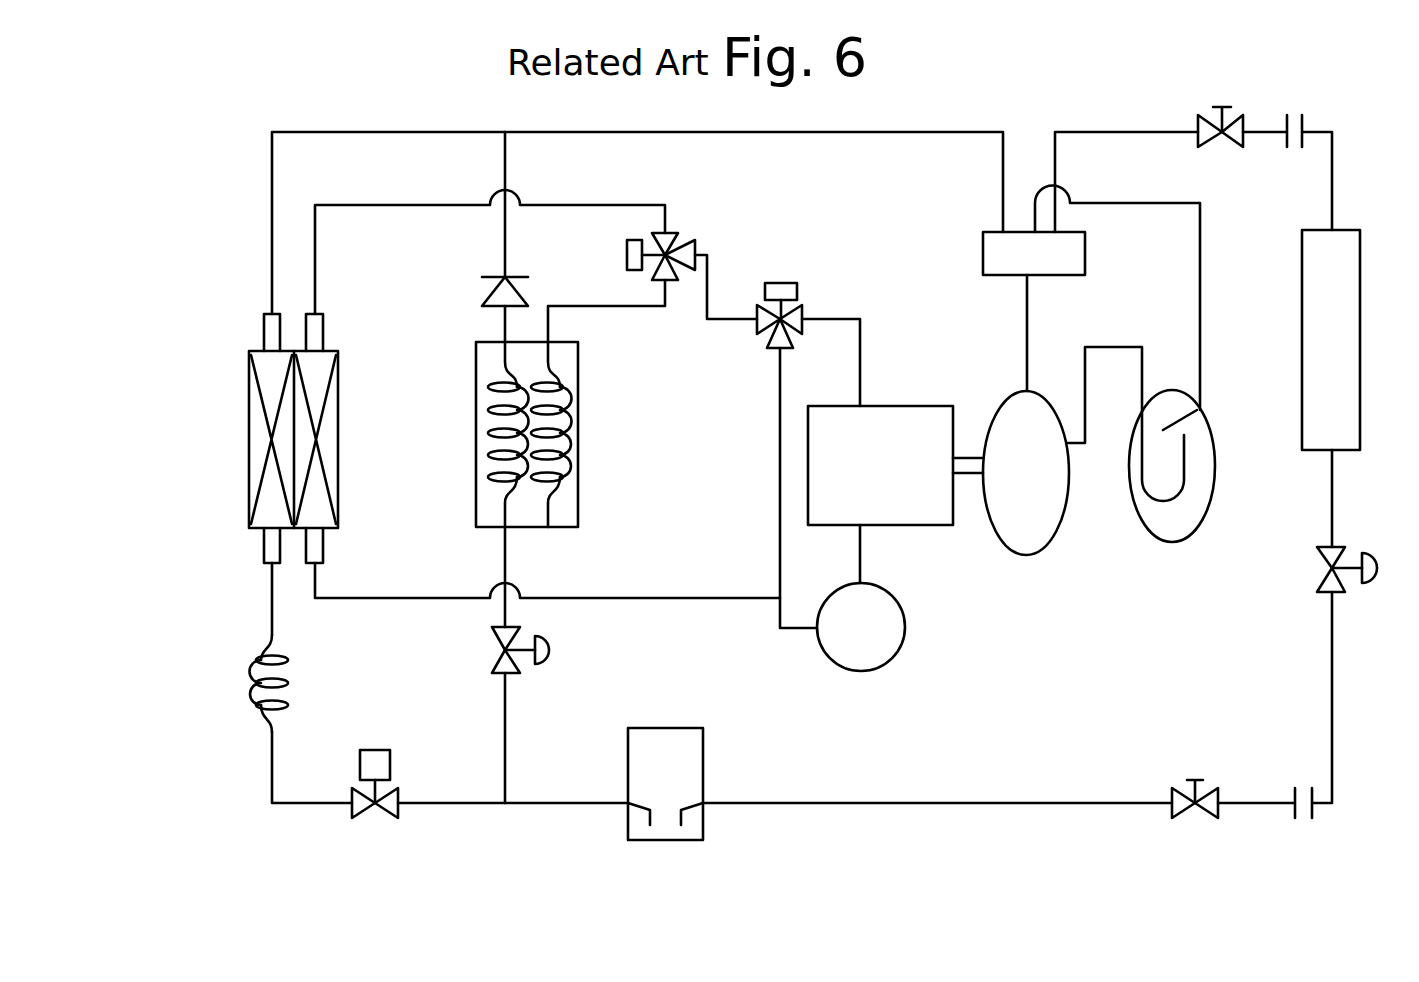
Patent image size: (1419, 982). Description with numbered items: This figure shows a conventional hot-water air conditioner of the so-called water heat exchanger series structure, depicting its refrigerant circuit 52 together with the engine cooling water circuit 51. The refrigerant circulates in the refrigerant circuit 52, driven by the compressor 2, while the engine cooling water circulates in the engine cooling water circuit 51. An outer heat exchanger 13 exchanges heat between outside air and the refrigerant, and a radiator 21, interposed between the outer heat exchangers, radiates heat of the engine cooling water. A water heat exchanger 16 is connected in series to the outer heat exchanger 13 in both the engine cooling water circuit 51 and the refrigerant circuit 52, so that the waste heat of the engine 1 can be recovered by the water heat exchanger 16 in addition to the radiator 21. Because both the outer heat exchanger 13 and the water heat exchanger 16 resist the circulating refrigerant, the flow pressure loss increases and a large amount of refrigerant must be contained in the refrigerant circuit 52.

The engine 1 is at (921, 528).
The compressor 2 is at (1045, 552).
The outer heat exchanger 13 is at (249, 425).
The radiator 21 is at (338, 470).
The water heat exchanger 16 is at (578, 432).
The engine cooling water circuit 51 is at (680, 598).
The refrigerant circuit 52 is at (1094, 808).